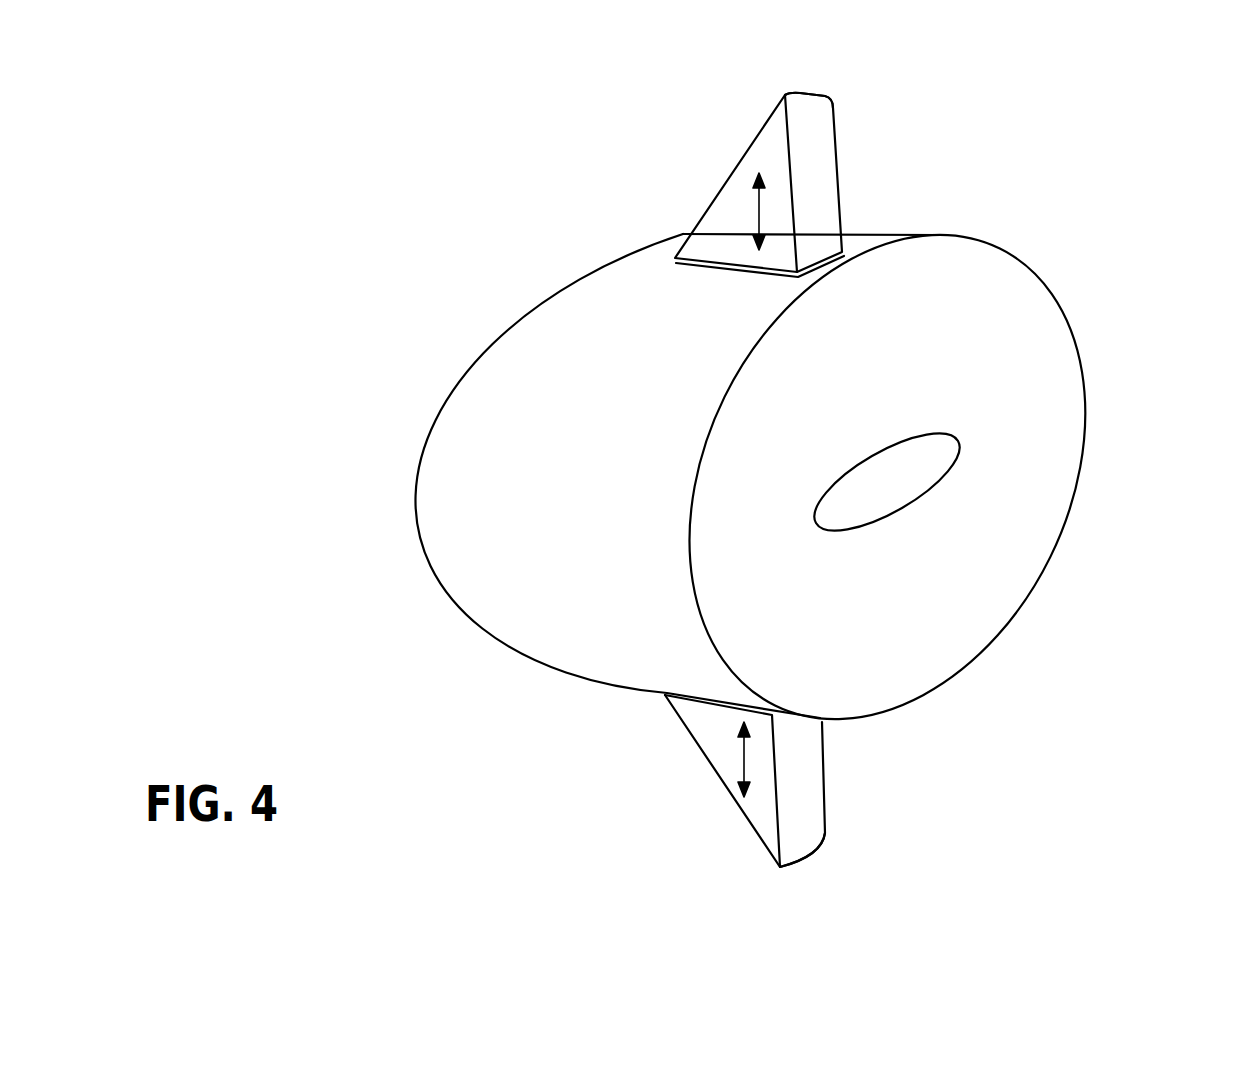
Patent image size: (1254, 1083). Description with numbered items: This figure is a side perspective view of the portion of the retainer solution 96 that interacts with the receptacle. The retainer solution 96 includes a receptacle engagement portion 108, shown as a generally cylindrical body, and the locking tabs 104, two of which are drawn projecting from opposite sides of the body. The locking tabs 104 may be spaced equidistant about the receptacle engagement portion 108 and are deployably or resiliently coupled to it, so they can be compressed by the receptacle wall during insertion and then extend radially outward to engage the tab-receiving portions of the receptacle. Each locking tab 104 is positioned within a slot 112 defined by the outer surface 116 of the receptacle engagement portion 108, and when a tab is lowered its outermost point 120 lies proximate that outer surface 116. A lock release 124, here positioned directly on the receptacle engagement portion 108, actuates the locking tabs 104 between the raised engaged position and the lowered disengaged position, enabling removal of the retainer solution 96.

The retainer solution 96 is at (390, 289).
The locking tab 104 is at (840, 147).
The receptacle engagement portion 108 is at (948, 231).
The slot 112 is at (853, 250).
The outer surface 116 is at (510, 458).
The outermost point 120 is at (800, 93).
The lock release 124 is at (920, 470).